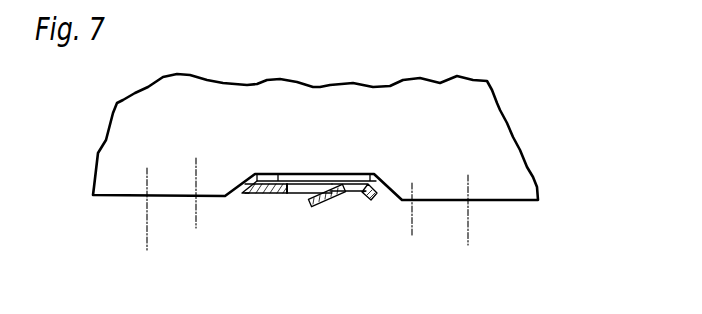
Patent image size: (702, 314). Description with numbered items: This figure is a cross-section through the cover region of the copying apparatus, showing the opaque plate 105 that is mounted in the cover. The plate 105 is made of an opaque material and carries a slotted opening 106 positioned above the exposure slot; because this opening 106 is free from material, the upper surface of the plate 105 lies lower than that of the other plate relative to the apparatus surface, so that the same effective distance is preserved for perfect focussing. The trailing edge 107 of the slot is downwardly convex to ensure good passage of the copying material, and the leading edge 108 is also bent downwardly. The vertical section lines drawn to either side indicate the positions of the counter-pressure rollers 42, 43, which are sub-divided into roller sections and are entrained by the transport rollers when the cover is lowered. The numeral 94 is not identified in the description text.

The counter-pressure roller 42 is at (196, 230).
The counter-pressure roller 43 is at (412, 236).
The insulating block 94 is at (272, 194).
The plate 105 is at (348, 187).
The slotted opening 106 is at (308, 187).
The trailing edge 107 is at (317, 206).
The leading edge 108 is at (245, 196).